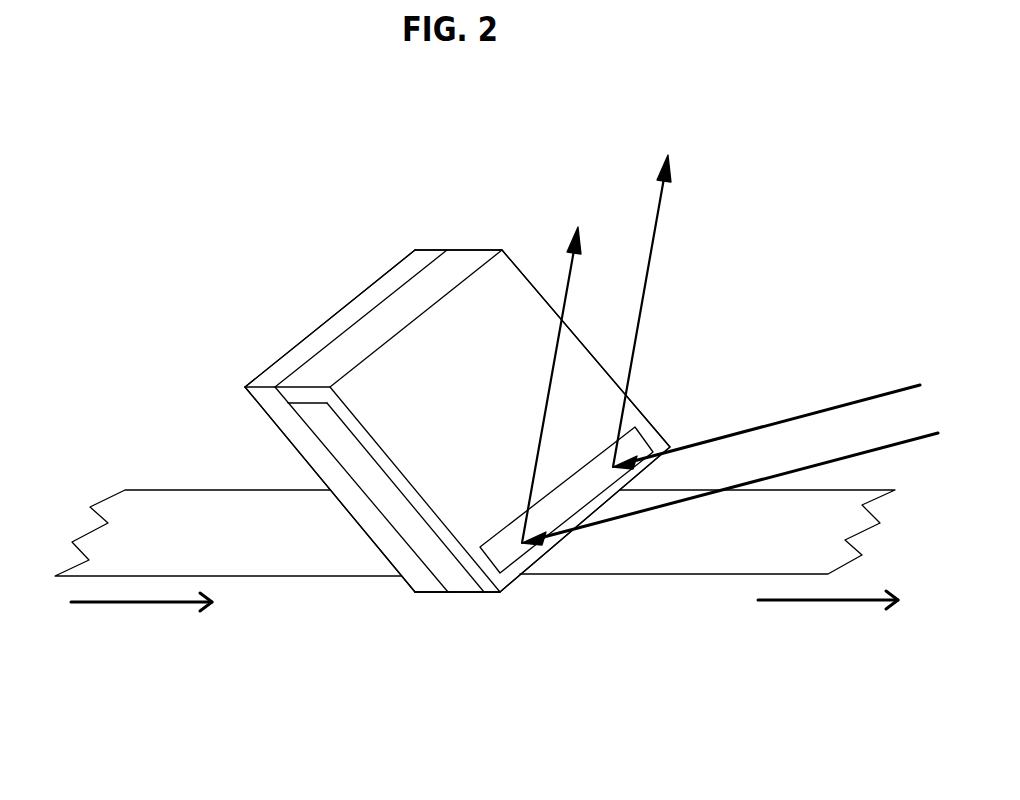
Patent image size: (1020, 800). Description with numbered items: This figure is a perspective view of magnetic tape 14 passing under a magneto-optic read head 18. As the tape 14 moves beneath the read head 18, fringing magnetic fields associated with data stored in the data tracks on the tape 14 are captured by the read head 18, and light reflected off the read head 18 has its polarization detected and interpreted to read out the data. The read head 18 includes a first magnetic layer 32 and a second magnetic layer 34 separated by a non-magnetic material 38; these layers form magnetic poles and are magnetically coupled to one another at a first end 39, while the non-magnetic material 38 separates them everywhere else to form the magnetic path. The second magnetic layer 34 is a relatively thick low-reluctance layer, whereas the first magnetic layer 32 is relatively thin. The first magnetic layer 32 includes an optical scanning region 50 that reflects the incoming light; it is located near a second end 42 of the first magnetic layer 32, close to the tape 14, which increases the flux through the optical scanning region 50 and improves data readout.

The magnetic tape 14 is at (243, 557).
The magneto-optic read head 18 is at (360, 258).
The first magnetic layer 32 is at (484, 257).
The second magnetic layer 34 is at (274, 405).
The non-magnetic material 38 is at (450, 575).
The first end 39 is at (448, 250).
The second end 42 is at (492, 592).
The optical scanning region 50 is at (500, 555).